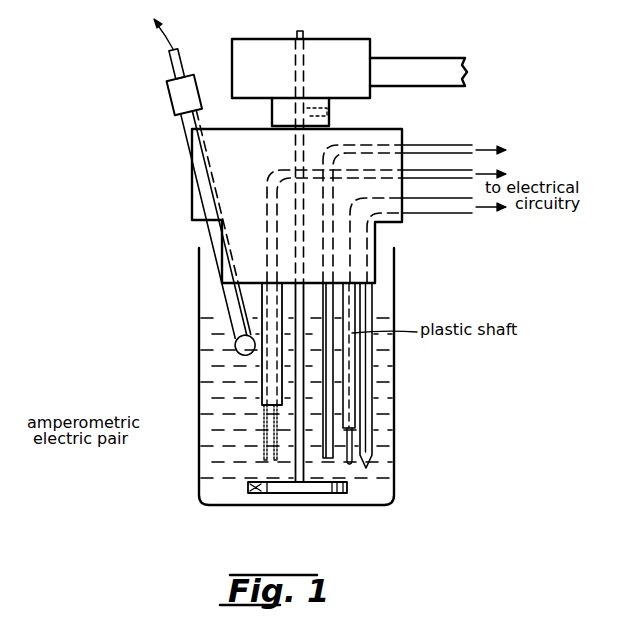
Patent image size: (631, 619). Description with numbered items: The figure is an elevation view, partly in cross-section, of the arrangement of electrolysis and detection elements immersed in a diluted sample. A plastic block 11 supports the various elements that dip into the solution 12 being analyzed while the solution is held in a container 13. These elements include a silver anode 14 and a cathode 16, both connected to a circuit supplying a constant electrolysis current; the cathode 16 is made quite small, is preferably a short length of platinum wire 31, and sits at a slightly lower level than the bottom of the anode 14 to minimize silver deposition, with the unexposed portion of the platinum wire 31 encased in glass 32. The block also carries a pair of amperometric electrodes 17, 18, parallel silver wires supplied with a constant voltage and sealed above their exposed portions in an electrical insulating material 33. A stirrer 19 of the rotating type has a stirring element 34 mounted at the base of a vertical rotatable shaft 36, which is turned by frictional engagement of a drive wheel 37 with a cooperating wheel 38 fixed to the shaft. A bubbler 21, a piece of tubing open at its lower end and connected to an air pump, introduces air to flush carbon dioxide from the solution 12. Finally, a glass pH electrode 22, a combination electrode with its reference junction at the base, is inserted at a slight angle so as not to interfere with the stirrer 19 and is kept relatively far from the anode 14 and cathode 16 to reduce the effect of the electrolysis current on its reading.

The plastic block 11 is at (250, 175).
The solution 12 is at (242, 468).
The container 13 is at (395, 486).
The silver anode 14 is at (352, 444).
The cathode 16 is at (366, 466).
The amperometric electrode 17 is at (264, 418).
The amperometric electrode 18 is at (274, 436).
The stirrer 19 is at (266, 500).
The bubbler 21 is at (332, 448).
The pH electrode 22 is at (226, 300).
The platinum wire 31 is at (365, 437).
The glass 32 is at (372, 373).
The electrical insulating material 33 is at (262, 365).
The stirring element 34 is at (262, 497).
The rotatable shaft 36 is at (304, 31).
The drive wheel 37 is at (428, 80).
The cooperating wheel 38 is at (346, 80).